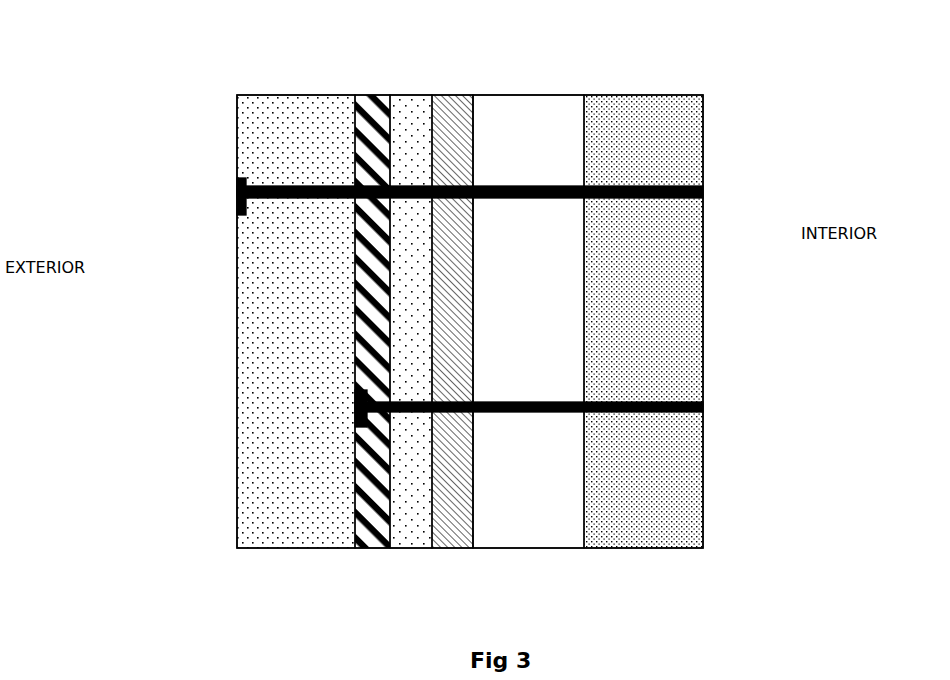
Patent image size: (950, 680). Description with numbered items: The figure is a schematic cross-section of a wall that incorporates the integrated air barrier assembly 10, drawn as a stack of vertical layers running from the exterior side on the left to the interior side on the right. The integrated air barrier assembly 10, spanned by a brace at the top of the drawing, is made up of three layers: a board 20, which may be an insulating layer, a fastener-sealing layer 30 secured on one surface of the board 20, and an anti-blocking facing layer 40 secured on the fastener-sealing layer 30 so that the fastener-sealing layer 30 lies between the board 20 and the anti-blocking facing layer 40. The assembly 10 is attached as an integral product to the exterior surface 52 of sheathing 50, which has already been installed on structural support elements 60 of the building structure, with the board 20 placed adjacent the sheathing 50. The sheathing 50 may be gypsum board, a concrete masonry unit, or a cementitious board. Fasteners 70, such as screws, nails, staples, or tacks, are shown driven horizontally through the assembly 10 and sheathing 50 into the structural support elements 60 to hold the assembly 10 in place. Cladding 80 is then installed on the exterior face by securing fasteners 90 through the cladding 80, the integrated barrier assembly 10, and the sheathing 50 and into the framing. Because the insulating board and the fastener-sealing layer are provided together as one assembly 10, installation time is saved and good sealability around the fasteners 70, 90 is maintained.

The integrated air barrier assembly 10 is at (473, 93).
The board 20 is at (455, 540).
The fastener-sealing layer 30 is at (407, 537).
The anti-blocking facing layer 40 is at (367, 540).
The sheathing 50 is at (525, 125).
The exterior surface 52 is at (473, 93).
The structural support elements 60 is at (678, 143).
The fasteners 70 is at (645, 401).
The cladding 80 is at (262, 387).
The fasteners 90 is at (287, 188).